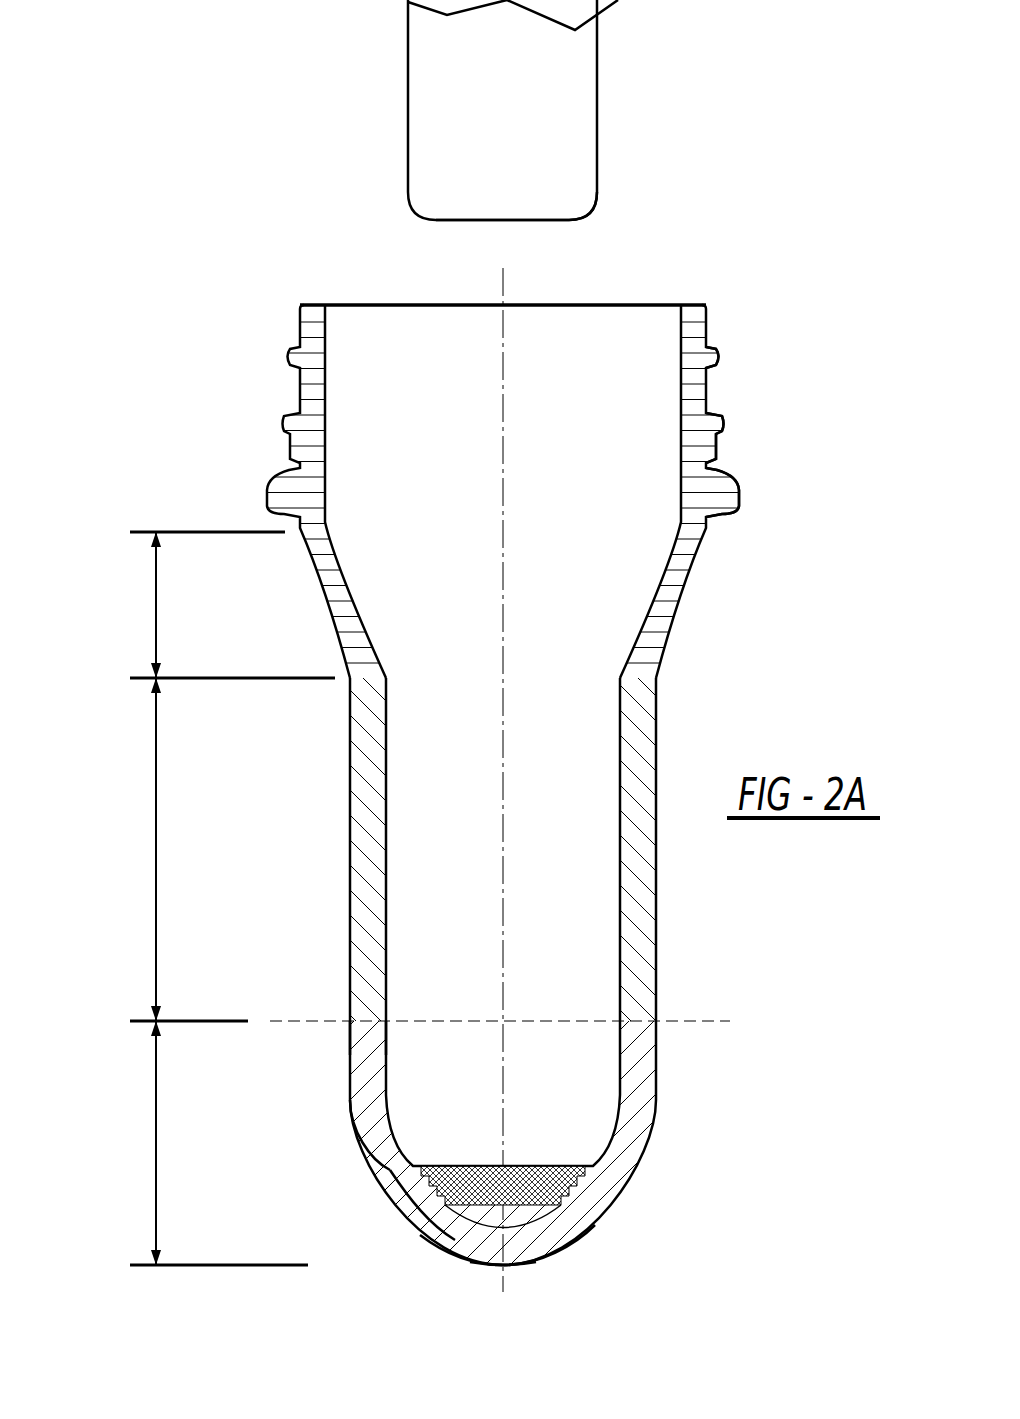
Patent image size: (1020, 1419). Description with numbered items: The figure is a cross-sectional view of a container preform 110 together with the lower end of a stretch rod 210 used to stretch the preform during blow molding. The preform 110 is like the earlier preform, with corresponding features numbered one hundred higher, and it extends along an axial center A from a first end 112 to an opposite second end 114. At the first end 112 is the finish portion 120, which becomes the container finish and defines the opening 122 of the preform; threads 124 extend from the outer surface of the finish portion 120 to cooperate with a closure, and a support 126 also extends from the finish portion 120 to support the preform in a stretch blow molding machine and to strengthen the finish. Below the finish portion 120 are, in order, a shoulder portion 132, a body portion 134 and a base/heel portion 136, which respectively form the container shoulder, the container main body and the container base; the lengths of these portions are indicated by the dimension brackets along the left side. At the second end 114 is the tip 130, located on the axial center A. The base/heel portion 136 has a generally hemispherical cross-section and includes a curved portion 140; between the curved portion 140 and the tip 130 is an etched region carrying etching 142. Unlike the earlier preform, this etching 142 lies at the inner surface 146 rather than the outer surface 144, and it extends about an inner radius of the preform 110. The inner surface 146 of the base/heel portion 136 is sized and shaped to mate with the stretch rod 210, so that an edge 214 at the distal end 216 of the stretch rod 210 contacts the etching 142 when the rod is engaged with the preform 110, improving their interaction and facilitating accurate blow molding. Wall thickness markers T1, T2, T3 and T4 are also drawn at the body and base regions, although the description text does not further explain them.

The preform 110 is at (116, 302).
The first end 112 is at (315, 303).
The second end 114 is at (528, 1265).
The finish portion 120 is at (300, 393).
The opening 122 is at (680, 347).
The threads 124 is at (724, 355).
The support 126 is at (736, 496).
The tip 130 is at (505, 1265).
The shoulder portion 132 is at (155, 578).
The body portion 134 is at (155, 910).
The base/heel portion 136 is at (155, 1178).
The curved portion 140 is at (357, 1138).
The etching 142 is at (425, 1172).
The outer surface 144 is at (457, 1253).
The inner surface 146 is at (477, 1225).
The stretch rod 210 is at (450, 92).
The edge 214 is at (598, 213).
The distal end 216 is at (473, 220).
The body wall thickness T1 is at (396, 1038).
The end cap upper wall thickness T2 is at (433, 1095).
The end cap lower wall thickness T3 is at (394, 1226).
The gate region thickness T4 is at (492, 1276).
The axial center A is at (505, 281).